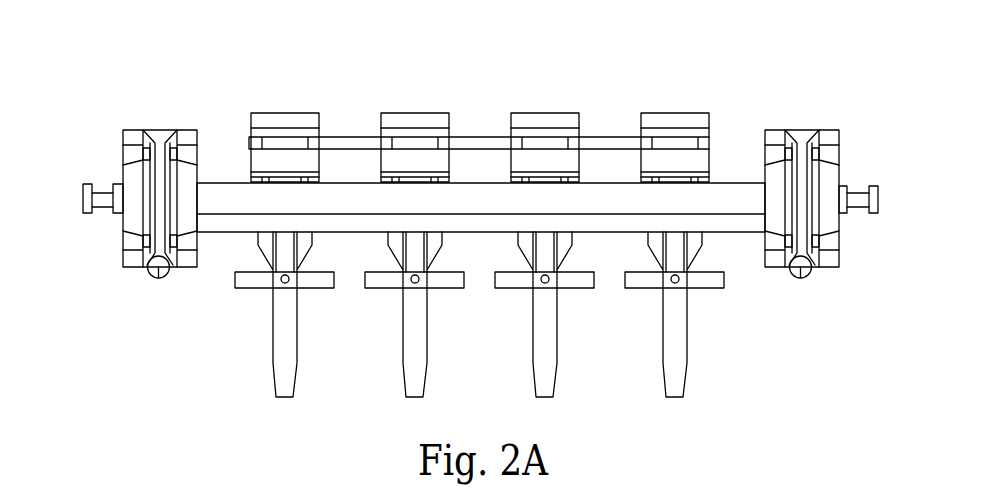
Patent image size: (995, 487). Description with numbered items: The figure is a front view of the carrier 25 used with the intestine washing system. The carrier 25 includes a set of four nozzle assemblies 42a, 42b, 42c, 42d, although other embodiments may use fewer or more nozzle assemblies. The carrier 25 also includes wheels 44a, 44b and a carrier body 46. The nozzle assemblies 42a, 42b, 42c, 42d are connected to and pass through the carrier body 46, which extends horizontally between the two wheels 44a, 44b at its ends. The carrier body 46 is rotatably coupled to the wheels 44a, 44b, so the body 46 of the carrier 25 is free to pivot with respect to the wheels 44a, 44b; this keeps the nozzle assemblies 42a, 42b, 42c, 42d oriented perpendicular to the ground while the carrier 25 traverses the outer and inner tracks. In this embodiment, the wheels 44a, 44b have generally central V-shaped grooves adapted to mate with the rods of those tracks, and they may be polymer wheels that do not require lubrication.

The carrier 25 is at (178, 26).
The nozzle assembly 42a is at (271, 112).
The nozzle assembly 42b is at (401, 112).
The nozzle assembly 42c is at (531, 112).
The nozzle assembly 42d is at (661, 112).
The wheel 44a is at (122, 161).
The wheel 44b is at (818, 130).
The carrier body 46 is at (219, 233).